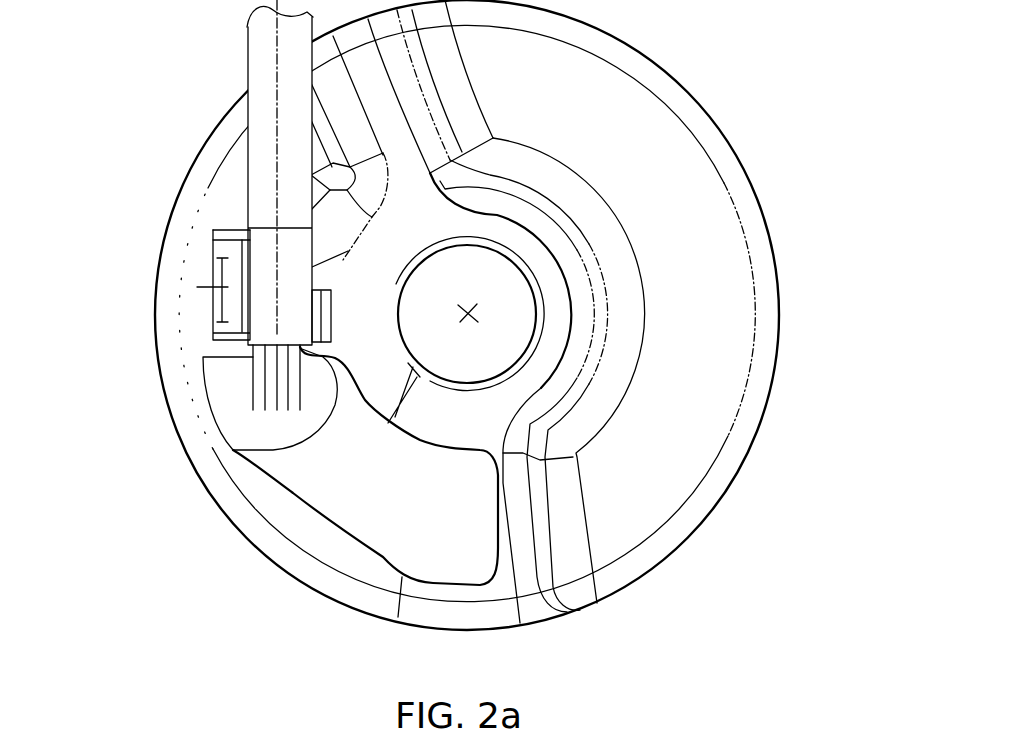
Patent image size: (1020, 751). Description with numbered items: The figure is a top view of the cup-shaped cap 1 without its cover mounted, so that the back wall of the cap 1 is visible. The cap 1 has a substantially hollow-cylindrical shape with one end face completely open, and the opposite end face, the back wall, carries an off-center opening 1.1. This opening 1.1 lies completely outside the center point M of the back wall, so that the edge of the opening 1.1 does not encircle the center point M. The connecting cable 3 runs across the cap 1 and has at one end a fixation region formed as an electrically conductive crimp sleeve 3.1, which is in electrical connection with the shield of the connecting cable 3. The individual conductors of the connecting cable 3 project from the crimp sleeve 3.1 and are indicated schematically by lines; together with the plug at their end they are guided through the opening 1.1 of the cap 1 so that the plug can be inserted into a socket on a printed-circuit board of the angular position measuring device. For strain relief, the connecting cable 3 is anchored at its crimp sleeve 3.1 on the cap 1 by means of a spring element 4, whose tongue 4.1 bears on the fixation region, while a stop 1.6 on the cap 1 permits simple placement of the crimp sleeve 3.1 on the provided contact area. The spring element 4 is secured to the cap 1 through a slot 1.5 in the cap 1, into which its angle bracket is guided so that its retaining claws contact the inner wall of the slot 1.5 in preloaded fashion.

The cap 1 is at (767, 250).
The opening 1.1 is at (320, 462).
The slot 1.5 is at (217, 232).
The stop 1.6 is at (233, 450).
The connecting cable 3 is at (262, 80).
The crimp sleeve 3.1 is at (257, 340).
The spring element 4 is at (203, 307).
The tongue 4.1 is at (227, 287).
The center point M is at (472, 310).